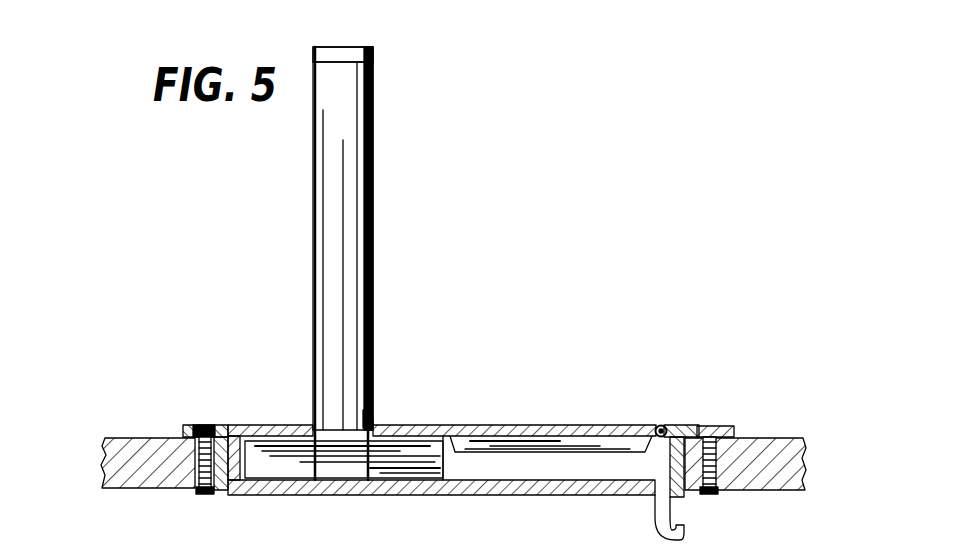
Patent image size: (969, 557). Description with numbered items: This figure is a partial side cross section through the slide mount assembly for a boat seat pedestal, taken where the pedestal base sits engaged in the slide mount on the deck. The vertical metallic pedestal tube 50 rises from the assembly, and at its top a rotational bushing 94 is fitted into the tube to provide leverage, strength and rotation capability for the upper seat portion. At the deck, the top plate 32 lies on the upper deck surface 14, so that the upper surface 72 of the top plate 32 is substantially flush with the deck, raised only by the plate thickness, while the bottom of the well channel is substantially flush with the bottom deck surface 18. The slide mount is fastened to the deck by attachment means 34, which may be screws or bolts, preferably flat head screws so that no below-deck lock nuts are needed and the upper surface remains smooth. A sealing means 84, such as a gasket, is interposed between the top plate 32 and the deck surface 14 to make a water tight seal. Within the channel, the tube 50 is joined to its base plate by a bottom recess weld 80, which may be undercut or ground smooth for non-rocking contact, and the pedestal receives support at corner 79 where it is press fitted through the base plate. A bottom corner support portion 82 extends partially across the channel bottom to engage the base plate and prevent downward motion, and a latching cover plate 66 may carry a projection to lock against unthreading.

The upper deck surface 14 is at (782, 440).
The bottom deck surface 18 is at (152, 488).
The top plate 32 is at (447, 456).
The attachment means 34 is at (200, 426).
The pedestal tube 50 is at (373, 293).
The latching cover plate 66 is at (283, 497).
The upper surface 72 is at (730, 427).
The corner 79 is at (373, 410).
The bottom recess weld 80 is at (372, 485).
The bottom corner support portion 82 is at (262, 483).
The sealing means 84 is at (183, 432).
The rotational bushing 94 is at (374, 52).